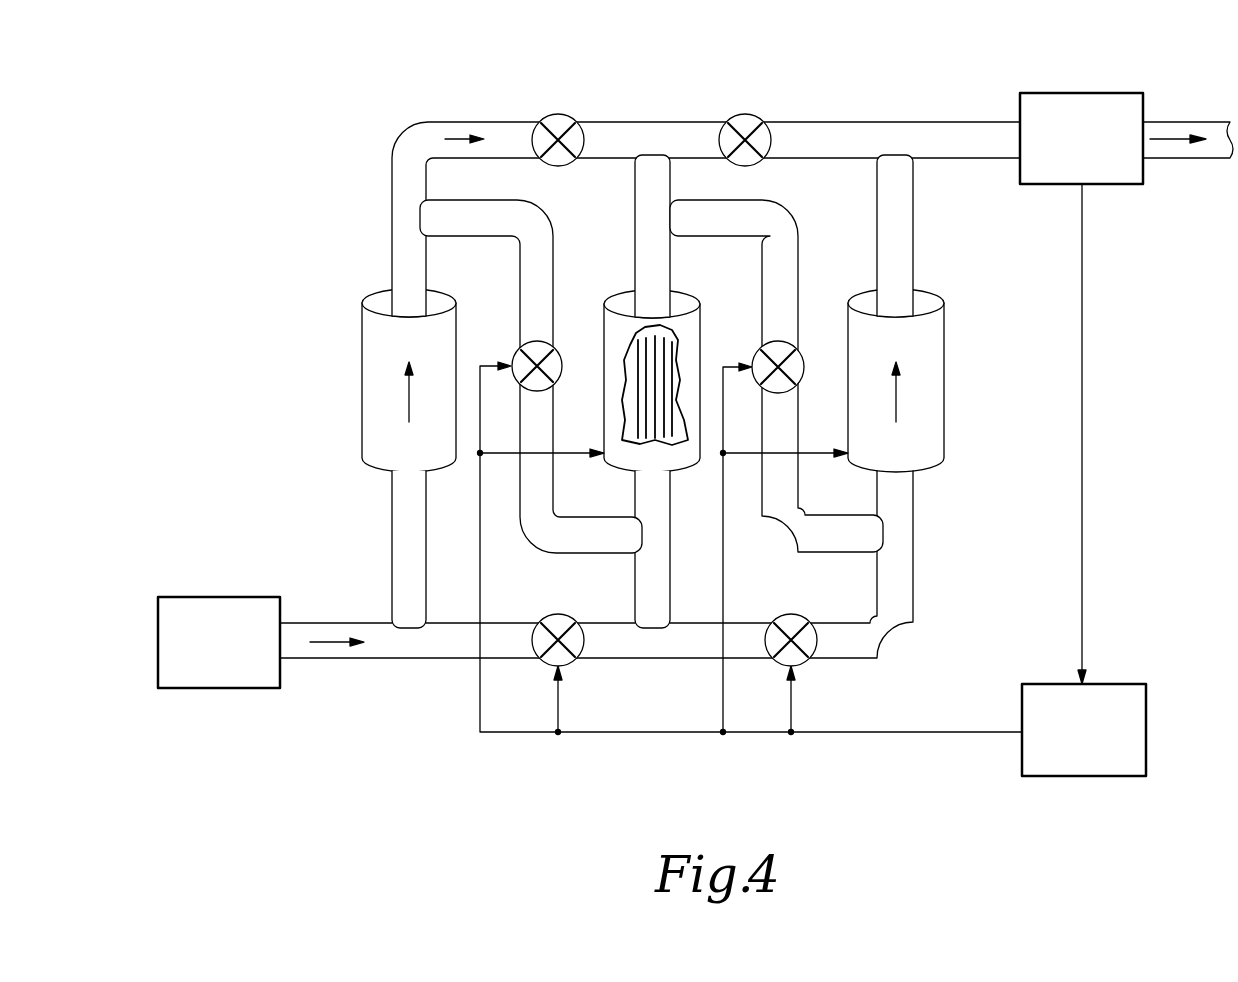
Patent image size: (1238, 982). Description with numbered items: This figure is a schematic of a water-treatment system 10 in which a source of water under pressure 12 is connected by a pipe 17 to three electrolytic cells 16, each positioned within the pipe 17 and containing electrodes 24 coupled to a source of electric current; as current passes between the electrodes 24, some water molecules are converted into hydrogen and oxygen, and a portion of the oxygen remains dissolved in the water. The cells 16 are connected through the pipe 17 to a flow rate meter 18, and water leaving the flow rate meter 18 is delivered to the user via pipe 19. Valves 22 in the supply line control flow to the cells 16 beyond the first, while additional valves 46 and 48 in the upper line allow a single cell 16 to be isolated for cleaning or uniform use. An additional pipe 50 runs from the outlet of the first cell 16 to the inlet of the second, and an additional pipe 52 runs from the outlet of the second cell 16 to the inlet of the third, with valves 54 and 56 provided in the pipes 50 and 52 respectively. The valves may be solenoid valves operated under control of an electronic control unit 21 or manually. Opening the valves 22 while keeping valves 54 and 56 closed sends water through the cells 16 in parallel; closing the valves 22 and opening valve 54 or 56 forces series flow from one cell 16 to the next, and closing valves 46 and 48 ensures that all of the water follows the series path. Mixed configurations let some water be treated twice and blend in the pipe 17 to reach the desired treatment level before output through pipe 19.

The exhaust system 10 is at (205, 285).
The source of water under pressure 12 is at (228, 597).
The electrolytic cell 16 is at (362, 381).
The pipe 17 is at (940, 122).
The flow rate meter 18 is at (1082, 93).
The pipe 19 is at (1182, 160).
The controller 21 is at (1080, 777).
The valve 22 is at (563, 615).
The electrode 24 is at (640, 350).
The valve 46 is at (547, 95).
The valve 48 is at (749, 95).
The additional pipe 50 is at (556, 265).
The additional pipe 52 is at (798, 265).
The valve 54 is at (518, 350).
The valve 56 is at (800, 350).